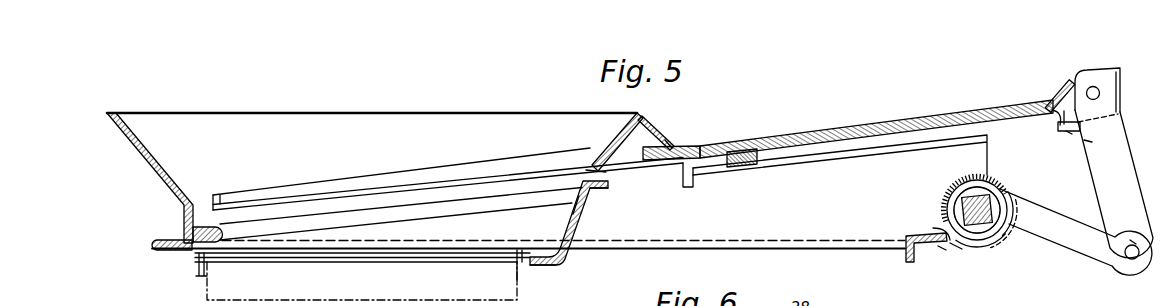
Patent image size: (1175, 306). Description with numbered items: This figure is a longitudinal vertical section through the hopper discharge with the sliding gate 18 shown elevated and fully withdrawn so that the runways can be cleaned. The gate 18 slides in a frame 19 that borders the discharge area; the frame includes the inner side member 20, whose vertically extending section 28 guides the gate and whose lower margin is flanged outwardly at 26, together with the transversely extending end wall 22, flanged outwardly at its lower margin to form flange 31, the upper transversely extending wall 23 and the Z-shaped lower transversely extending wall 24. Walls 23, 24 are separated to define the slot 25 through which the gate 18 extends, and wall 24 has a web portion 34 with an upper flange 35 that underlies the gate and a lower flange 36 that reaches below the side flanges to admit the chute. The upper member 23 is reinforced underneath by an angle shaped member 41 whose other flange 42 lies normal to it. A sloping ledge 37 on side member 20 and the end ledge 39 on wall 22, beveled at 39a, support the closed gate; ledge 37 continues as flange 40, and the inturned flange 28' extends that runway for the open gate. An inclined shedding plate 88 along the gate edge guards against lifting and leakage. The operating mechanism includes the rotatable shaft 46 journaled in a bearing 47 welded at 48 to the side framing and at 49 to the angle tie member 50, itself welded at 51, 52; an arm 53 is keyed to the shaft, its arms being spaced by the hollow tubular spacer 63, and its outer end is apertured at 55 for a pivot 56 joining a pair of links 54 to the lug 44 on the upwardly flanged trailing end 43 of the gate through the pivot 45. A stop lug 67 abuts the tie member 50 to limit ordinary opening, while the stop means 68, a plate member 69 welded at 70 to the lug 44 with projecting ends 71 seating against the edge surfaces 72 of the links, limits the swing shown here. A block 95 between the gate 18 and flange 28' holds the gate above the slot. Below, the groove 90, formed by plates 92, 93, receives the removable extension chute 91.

The sliding gate 18 is at (842, 130).
The frame 19 is at (118, 154).
The inner side member 20 is at (377, 112).
The transversely extending end wall 22 is at (162, 176).
The upper transversely extending wall 23 is at (617, 135).
The lower transversely extending wall 24 is at (574, 231).
The slot 25 is at (591, 172).
The outwardly flanged lower margin 26 is at (462, 243).
The vertically extending section 28 is at (580, 120).
The inturned flange 28' is at (840, 161).
The outwardly extending flange 31 is at (160, 243).
The web portion 34 is at (574, 212).
The upper flange 35 is at (606, 189).
The lower flange 36 is at (562, 263).
The ledge 37 is at (335, 218).
The end ledge 39 is at (191, 241).
The bevel 39a is at (222, 229).
The flange 40 is at (669, 182).
The angle shaped member 41 is at (640, 120).
The flange 42 is at (665, 140).
The upwardly flanged trailing end 43 is at (1063, 81).
The lug 44 is at (1104, 70).
The pivot 45 is at (1100, 93).
The rotatable shaft 46 is at (1000, 223).
The bearing 47 is at (1005, 192).
The weld 48 is at (947, 192).
The weld 49 is at (940, 233).
The angle tie member 50 is at (941, 250).
The weld 51 is at (960, 248).
The weld 52 is at (905, 240).
The arm 53 is at (1052, 254).
The link 54 is at (1122, 170).
The aperture 55 is at (1134, 242).
The pivot 56 is at (1131, 262).
The hollow tubular spacer 63 is at (982, 195).
The stop lug 67 is at (980, 247).
The stop means 68 is at (1070, 134).
The plate member 69 is at (1058, 126).
The weld 70 is at (1057, 112).
The projecting end 71 is at (1082, 125).
The edge surface 72 is at (1088, 143).
The inclined shedding plate 88 is at (472, 165).
The groove 90 is at (398, 253).
The removable extension chute 91 is at (530, 293).
The plate 92 is at (448, 255).
The plate 93 is at (485, 259).
The block 95 is at (747, 164).